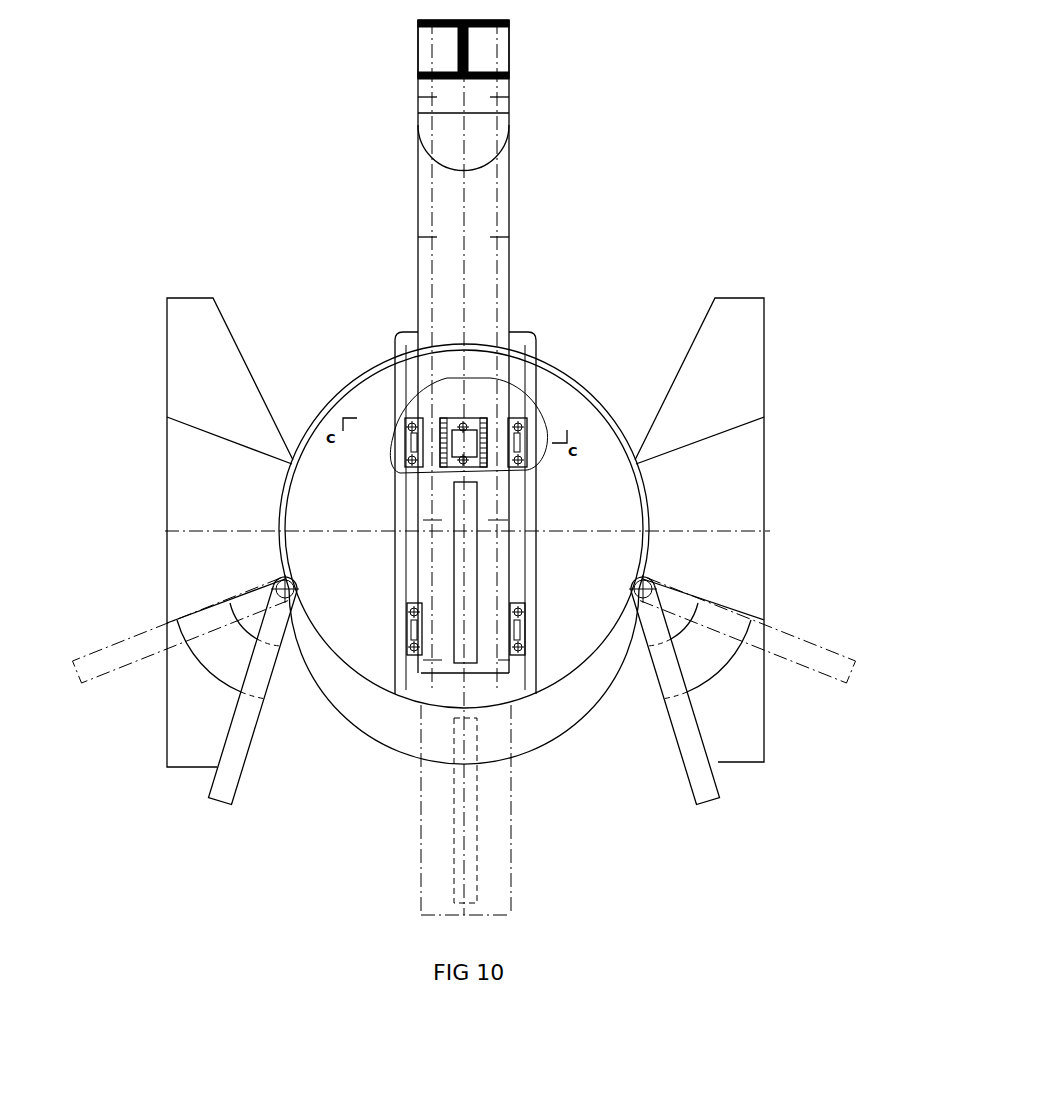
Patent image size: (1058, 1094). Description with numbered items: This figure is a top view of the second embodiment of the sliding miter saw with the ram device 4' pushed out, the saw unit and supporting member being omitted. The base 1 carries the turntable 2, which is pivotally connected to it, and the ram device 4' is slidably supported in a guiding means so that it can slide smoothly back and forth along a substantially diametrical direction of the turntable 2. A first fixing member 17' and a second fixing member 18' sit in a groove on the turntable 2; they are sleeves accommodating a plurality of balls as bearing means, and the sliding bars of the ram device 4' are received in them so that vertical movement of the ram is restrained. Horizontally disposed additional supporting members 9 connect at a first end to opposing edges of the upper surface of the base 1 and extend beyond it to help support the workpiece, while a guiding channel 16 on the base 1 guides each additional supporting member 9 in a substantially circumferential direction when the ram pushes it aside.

The base 1 is at (530, 532).
The turntable 2 is at (592, 548).
The ram device 4' is at (546, 346).
The additional supporting member 9 is at (511, 733).
The guiding channel 16 is at (503, 687).
The first fixing member 17' is at (344, 633).
The second fixing member 18' is at (581, 624).